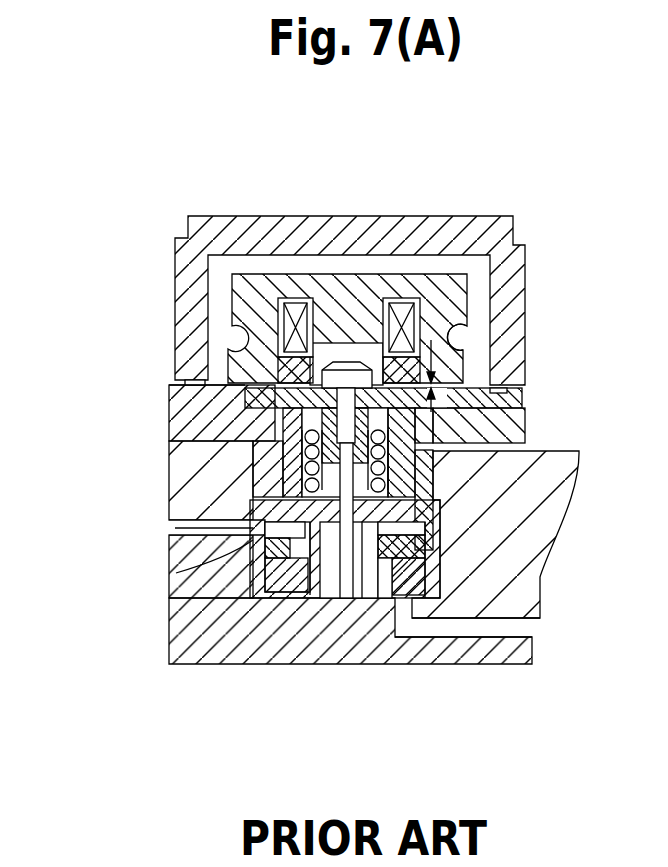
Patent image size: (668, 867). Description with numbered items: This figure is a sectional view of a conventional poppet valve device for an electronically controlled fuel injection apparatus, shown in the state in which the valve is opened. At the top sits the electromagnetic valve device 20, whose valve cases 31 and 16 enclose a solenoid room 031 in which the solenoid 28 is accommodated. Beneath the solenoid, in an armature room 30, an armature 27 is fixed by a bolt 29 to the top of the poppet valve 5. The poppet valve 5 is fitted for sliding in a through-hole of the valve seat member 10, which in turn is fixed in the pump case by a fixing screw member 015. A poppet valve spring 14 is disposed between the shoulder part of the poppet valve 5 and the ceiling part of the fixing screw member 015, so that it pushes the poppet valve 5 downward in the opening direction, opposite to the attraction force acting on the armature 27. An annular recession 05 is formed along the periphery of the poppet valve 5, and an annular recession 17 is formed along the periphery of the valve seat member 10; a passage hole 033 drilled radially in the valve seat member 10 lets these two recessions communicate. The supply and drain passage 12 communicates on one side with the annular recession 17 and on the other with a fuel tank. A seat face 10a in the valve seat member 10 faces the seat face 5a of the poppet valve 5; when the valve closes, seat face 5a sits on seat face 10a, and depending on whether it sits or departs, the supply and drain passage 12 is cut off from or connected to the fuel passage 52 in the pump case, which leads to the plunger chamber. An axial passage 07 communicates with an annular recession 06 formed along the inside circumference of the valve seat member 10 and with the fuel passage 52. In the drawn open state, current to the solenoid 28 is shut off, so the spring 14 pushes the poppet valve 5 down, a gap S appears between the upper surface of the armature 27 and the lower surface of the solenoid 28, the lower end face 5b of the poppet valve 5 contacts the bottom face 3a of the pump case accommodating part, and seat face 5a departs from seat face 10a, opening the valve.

The electromagnetic valve device 20 is at (176, 230).
The valve case 31 is at (504, 277).
The solenoid room 031 is at (495, 324).
The gap S is at (490, 356).
The armature 27 is at (505, 409).
The solenoid 28 is at (387, 292).
The bolt 29 is at (345, 360).
The armature room 30 is at (200, 397).
The valve case 16 is at (507, 443).
The supply and drain passage 12 is at (190, 517).
The poppet valve spring 14 is at (433, 470).
The fixing screw member 015 is at (433, 500).
The annular recession 17 is at (433, 538).
The annular recession 05 is at (500, 588).
The passage hole 033 is at (175, 528).
The seat face 10a is at (176, 573).
The valve seat member 10 is at (240, 557).
The annular recession 06 is at (242, 590).
The seat face 5a is at (268, 582).
The poppet valve 5 is at (352, 603).
The bottom face 3a is at (330, 602).
The lower end face 5b is at (369, 605).
The axial passage 07 is at (393, 600).
The fuel passage 52 is at (487, 628).